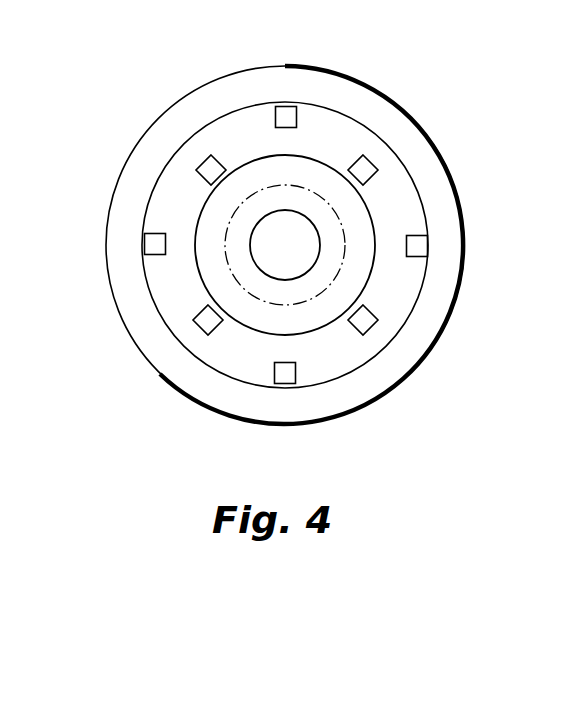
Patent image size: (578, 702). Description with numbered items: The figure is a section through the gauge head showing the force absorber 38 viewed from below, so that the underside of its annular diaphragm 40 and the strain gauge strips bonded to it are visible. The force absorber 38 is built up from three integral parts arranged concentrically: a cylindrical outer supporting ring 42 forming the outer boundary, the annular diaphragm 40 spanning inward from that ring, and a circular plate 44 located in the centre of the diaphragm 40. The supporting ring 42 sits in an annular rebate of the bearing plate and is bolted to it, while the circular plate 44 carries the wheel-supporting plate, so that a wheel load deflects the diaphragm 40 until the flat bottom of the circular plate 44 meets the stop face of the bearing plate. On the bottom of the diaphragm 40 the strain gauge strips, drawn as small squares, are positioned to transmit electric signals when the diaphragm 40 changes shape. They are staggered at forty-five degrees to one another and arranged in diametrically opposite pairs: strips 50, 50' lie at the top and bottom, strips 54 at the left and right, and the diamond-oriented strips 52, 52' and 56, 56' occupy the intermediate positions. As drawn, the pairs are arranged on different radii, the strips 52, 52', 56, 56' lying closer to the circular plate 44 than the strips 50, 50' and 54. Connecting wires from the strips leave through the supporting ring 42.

The force absorber 38 is at (438, 132).
The annular diaphragm 40 is at (393, 213).
The outer supporting ring 42 is at (428, 172).
The circular plate 44 is at (352, 268).
The strain gauge strip 50 is at (357, 93).
The strain gauge strip 50' is at (399, 375).
The strain gauge strip 52 is at (406, 136).
The strain gauge strip 52' is at (135, 328).
The strain gauge strip 54 is at (155, 243).
The strain gauge strip 56 is at (432, 329).
The strain gauge strip 56' is at (160, 127).